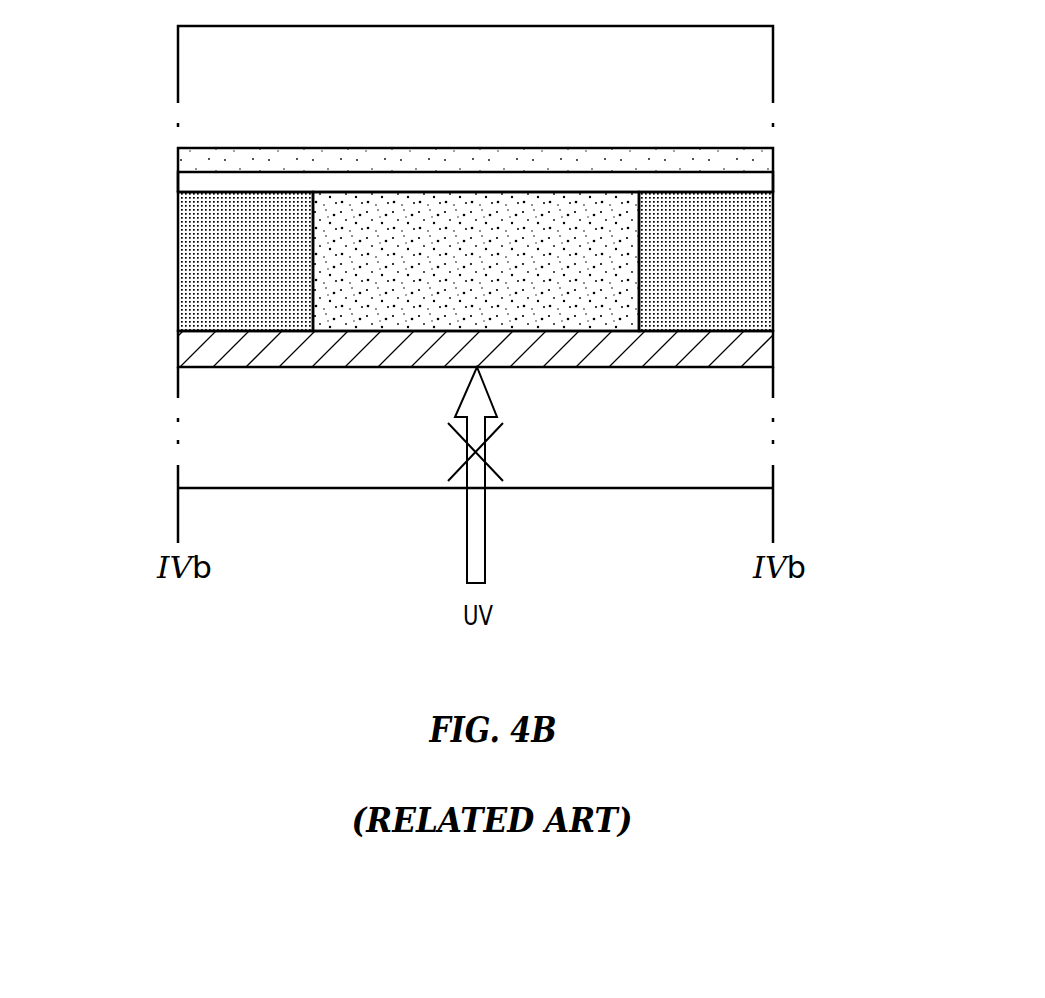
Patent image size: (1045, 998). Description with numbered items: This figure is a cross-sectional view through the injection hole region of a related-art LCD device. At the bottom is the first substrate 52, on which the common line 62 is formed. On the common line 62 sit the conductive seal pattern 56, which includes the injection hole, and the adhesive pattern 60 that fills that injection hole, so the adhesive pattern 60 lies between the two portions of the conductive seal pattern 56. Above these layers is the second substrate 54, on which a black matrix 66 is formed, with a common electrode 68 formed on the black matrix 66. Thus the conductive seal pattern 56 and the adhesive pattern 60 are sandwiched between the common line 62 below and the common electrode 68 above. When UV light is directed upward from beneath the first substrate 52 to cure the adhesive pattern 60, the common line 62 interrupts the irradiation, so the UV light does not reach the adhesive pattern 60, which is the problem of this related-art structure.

The first substrate 52 is at (745, 473).
The second substrate 54 is at (747, 126).
The conductive seal pattern 56 is at (213, 232).
The adhesive pattern 60 is at (340, 287).
The common line 62 is at (753, 352).
The black matrix 66 is at (743, 158).
The common electrode 68 is at (753, 182).